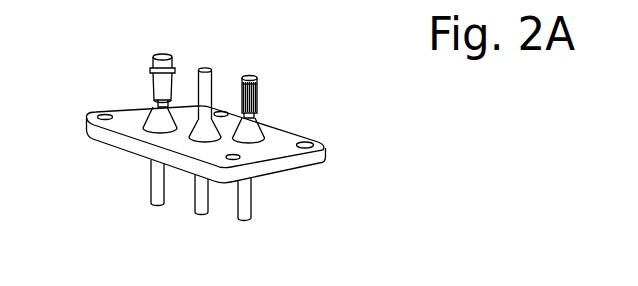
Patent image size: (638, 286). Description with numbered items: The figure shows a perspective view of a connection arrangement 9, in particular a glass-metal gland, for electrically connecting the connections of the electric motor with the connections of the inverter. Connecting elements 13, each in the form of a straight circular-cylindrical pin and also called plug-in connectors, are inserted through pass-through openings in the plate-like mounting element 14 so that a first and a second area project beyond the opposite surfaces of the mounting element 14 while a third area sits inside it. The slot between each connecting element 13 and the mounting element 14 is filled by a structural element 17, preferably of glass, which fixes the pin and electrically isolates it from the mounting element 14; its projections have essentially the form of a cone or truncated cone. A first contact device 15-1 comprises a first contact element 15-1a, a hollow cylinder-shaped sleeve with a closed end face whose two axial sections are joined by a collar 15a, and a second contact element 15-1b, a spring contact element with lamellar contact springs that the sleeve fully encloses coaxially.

The connection arrangement 9 is at (314, 69).
The connecting element 13 is at (242, 192).
The mounting element 14 is at (128, 120).
The first contact device 15-1 is at (152, 59).
The first contact element 15-1a is at (158, 88).
The second contact element 15-1b is at (250, 103).
The collar 15a is at (173, 73).
The structural element 17 is at (175, 137).